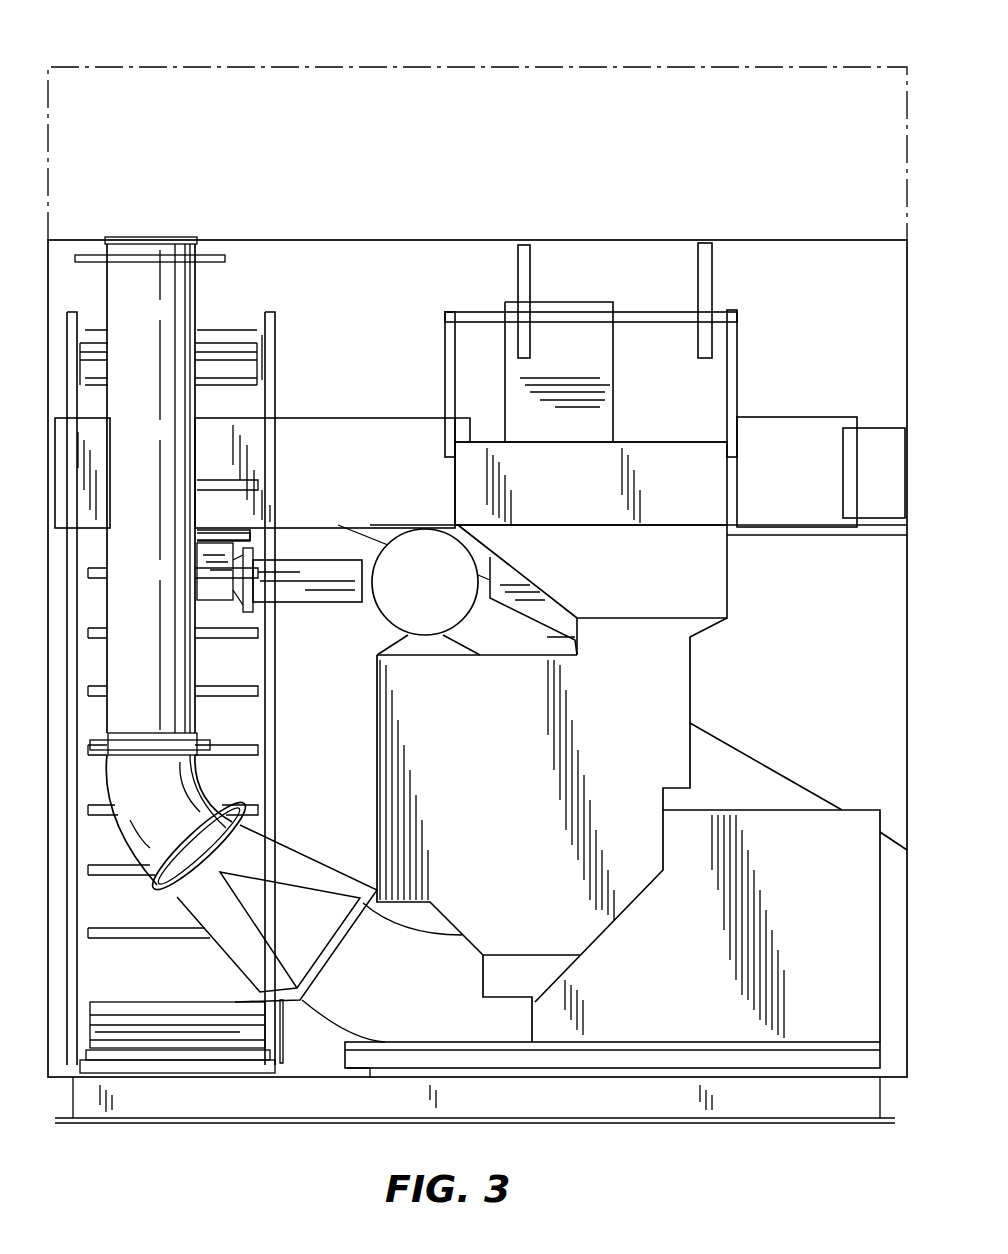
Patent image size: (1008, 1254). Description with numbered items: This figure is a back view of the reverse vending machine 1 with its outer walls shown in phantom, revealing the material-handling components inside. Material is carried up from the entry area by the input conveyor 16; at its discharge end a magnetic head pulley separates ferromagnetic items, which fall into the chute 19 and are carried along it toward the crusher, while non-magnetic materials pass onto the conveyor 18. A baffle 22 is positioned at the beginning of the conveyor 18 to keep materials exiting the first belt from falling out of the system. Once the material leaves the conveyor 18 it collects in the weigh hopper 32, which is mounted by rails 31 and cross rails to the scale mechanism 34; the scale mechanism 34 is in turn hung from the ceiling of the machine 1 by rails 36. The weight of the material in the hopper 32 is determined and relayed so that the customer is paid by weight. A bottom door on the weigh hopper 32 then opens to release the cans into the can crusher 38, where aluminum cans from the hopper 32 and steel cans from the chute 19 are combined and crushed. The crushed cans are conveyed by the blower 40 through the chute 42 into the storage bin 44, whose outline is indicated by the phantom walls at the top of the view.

The reverse vending machine 1 is at (368, 64).
The input conveyor 16 is at (192, 981).
The conveyor 18 is at (402, 458).
The chute 19 is at (373, 533).
The baffle 22 is at (357, 467).
The rails 31 is at (455, 378).
The hopper 32 is at (600, 492).
The scale mechanism 34 is at (663, 322).
The rails 36 is at (518, 258).
The can crusher 38 is at (483, 802).
The blower 40 is at (828, 907).
The chute 42 is at (154, 472).
The storage bin 44 is at (677, 63).